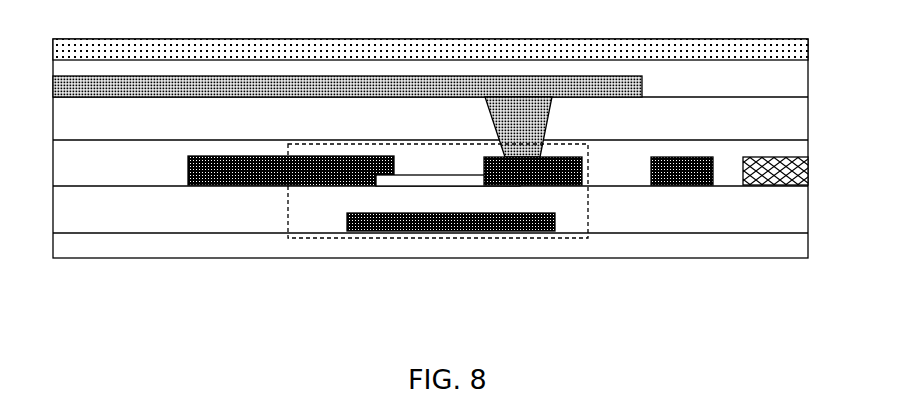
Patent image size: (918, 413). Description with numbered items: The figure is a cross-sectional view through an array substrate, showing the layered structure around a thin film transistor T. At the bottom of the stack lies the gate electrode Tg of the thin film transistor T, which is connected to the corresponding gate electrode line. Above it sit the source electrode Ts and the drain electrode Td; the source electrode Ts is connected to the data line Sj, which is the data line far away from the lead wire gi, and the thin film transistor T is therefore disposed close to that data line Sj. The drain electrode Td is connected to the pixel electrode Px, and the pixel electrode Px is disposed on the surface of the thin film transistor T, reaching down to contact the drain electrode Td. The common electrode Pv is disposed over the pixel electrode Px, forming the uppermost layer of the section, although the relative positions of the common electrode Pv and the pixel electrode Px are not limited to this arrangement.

The common electrode Pv is at (373, 52).
The pixel electrode Px is at (453, 87).
The thin film transistor T is at (287, 218).
The data line Sj is at (216, 172).
The source electrode Ts is at (330, 172).
The drain electrode Td is at (563, 173).
The lead wire gi is at (787, 160).
The gate electrode Tg is at (487, 227).